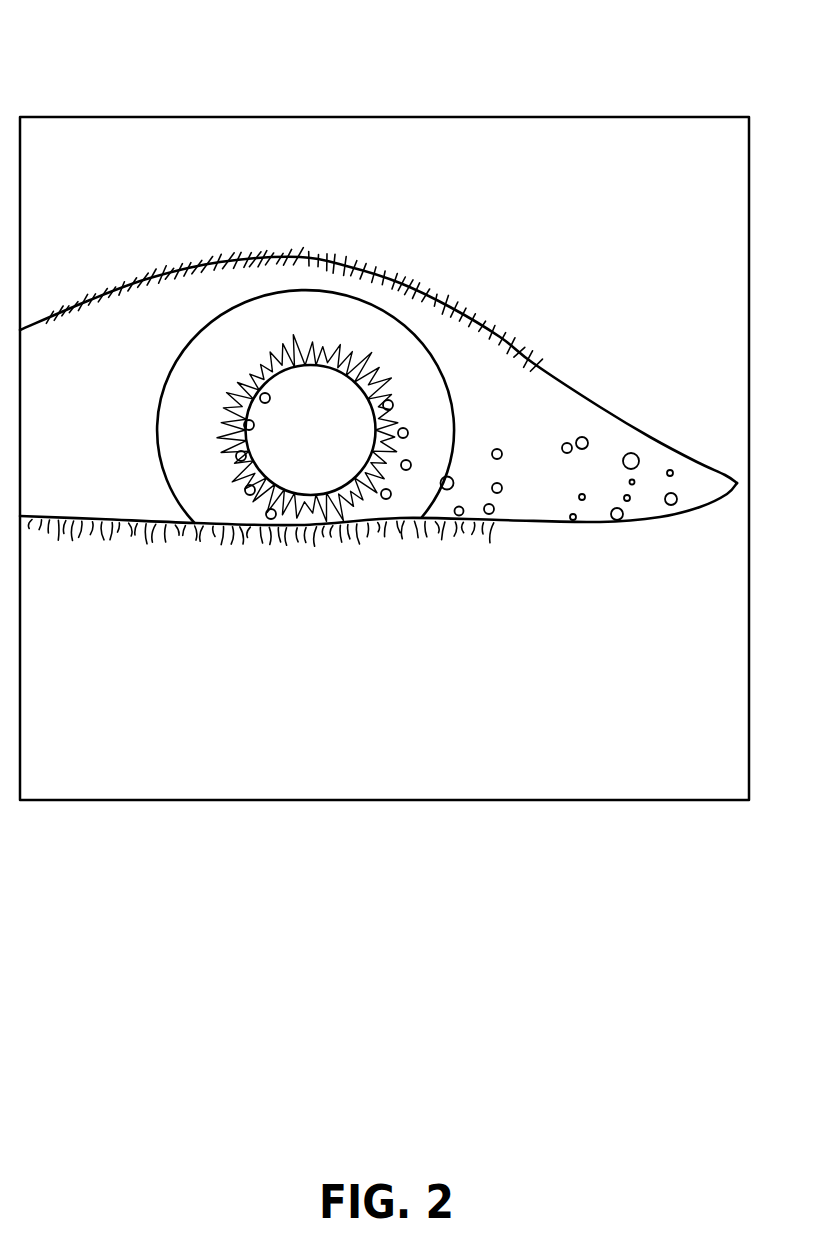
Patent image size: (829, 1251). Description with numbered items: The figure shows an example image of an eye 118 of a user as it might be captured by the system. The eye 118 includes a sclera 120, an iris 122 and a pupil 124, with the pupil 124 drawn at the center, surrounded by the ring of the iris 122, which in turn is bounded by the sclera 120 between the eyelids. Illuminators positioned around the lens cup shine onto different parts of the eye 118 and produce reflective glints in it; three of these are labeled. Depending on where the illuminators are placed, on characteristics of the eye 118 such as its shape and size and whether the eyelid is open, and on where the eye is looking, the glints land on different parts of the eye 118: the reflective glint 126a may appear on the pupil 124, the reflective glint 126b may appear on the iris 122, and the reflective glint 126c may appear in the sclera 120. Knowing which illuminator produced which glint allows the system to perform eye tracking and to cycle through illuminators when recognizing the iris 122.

The eye 118 is at (130, 84).
The sclera 120 is at (500, 410).
The iris 122 is at (309, 328).
The pupil 124 is at (338, 404).
The reflective glint 126a is at (258, 397).
The reflective glint 126b is at (275, 523).
The reflective glint 126c is at (495, 517).